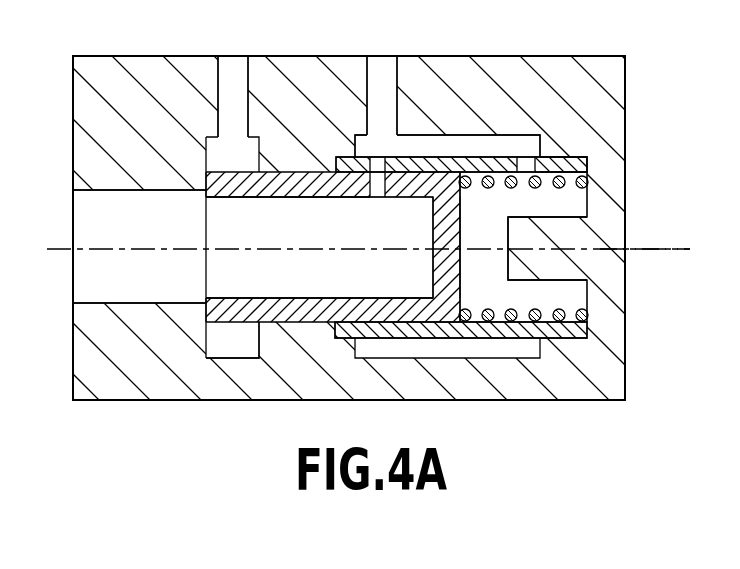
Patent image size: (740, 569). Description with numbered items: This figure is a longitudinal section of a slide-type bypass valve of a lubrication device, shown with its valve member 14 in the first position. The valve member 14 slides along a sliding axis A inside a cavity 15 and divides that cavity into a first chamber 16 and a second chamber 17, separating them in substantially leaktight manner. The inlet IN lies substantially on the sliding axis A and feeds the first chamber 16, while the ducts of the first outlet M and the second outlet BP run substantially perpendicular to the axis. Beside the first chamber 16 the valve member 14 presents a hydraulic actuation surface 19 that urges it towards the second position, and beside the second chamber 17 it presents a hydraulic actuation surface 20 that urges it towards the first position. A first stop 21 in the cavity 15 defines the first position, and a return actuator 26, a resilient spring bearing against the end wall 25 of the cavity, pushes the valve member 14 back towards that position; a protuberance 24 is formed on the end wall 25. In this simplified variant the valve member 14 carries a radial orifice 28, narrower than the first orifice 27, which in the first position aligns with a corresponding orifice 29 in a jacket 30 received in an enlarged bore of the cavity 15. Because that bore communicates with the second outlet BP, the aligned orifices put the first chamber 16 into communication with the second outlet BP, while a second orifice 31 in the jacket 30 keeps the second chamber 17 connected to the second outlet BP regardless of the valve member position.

The valve member 14 is at (268, 310).
The cavity 15 is at (294, 303).
The first chamber 16 is at (292, 280).
The second chamber 17 is at (500, 244).
The hydraulic actuation surface 19 is at (433, 279).
The hydraulic actuation surface 20 is at (460, 210).
The first stop 21 is at (209, 188).
The protuberance 24 is at (553, 268).
The end wall 25 is at (580, 203).
The return actuator 26 is at (552, 324).
The first orifice 27 is at (232, 197).
The radial orifice 28 is at (378, 186).
The orifice 29 is at (383, 163).
The jacket 30 is at (583, 162).
The second orifice 31 is at (527, 165).
The first outlet M is at (229, 66).
The second outlet BP is at (379, 68).
The inlet IN is at (83, 238).
The sliding axis A is at (653, 249).